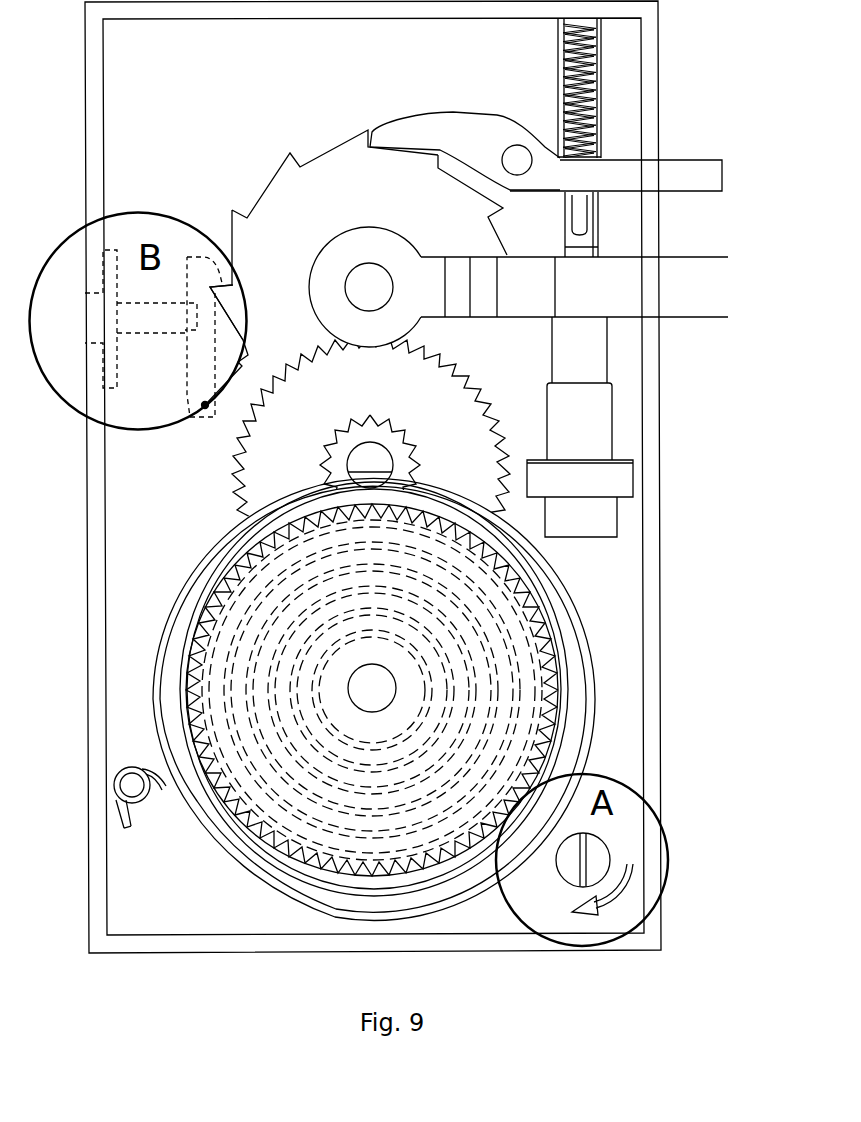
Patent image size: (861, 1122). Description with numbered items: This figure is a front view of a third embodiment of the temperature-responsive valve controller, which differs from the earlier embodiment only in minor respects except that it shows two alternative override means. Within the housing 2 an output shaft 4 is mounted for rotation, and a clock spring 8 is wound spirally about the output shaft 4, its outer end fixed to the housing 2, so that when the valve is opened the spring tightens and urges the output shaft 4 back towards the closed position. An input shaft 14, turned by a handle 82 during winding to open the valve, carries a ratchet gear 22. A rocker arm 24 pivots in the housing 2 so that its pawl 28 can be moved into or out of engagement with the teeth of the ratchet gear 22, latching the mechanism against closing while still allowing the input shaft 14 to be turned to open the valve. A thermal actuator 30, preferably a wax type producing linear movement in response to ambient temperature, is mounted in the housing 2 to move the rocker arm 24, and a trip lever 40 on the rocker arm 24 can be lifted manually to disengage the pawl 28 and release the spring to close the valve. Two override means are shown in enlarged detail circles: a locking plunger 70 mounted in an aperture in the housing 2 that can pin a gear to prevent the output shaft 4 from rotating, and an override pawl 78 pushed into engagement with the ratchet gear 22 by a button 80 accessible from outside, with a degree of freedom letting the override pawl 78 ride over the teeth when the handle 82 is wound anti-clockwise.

The housing 2 is at (660, 542).
The output shaft 4 is at (392, 703).
The clock spring 8 is at (500, 665).
The input shaft 14 is at (347, 275).
The ratchet gear 22 is at (322, 172).
The rocker arm 24 is at (485, 125).
The pawl 28 is at (377, 132).
The thermal actuator 30 is at (677, 462).
The trip lever 40 is at (690, 170).
The locking plunger 70 is at (605, 843).
The override pawl 78 is at (203, 262).
The button 80 is at (85, 323).
The handle 82 is at (692, 298).